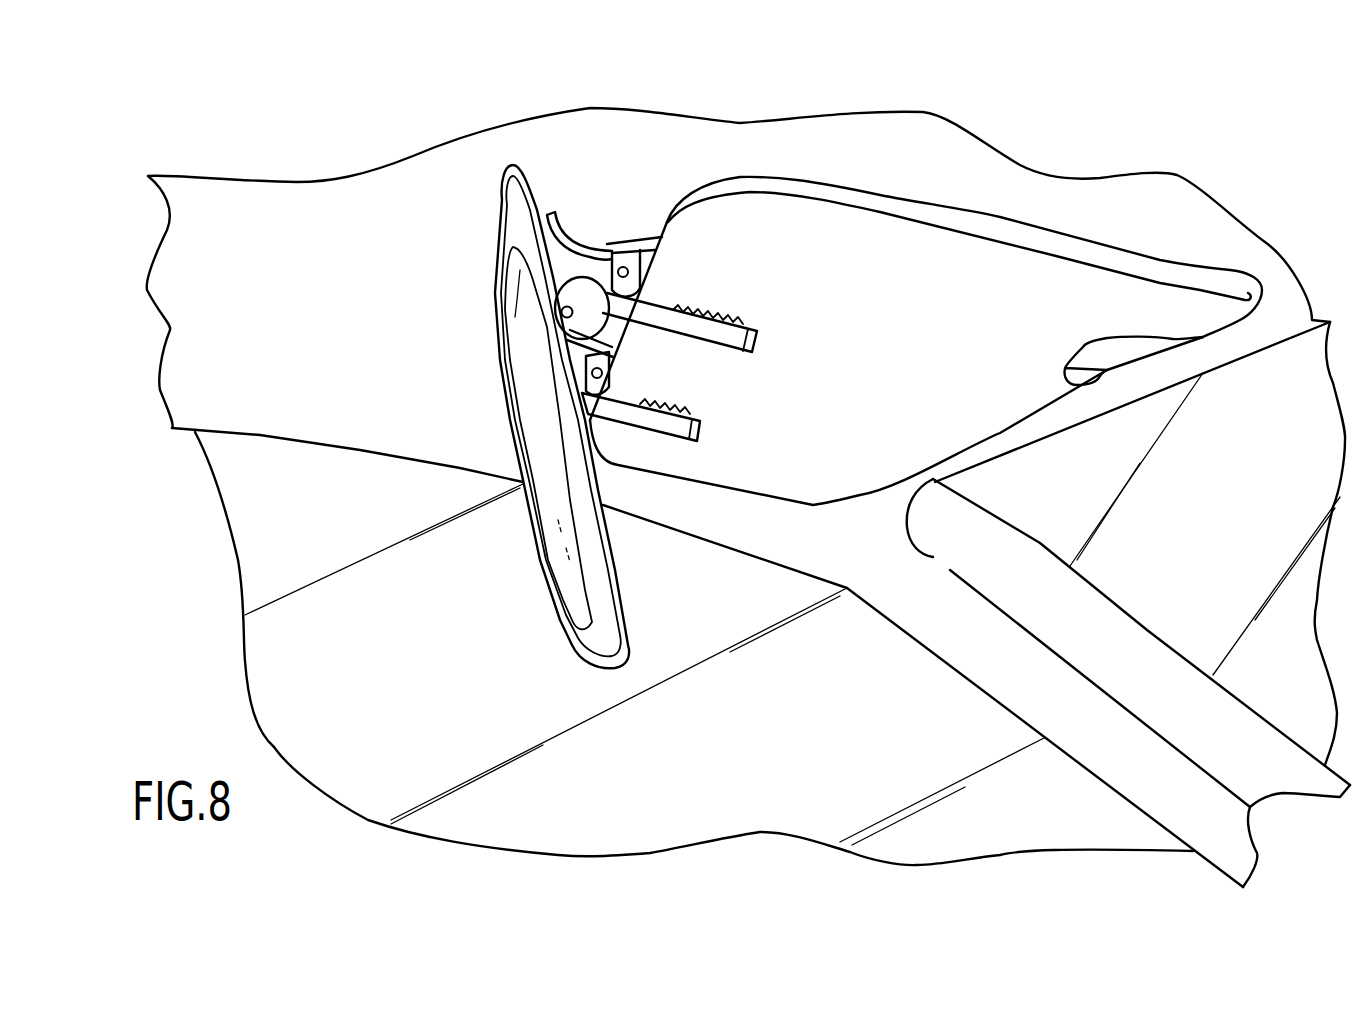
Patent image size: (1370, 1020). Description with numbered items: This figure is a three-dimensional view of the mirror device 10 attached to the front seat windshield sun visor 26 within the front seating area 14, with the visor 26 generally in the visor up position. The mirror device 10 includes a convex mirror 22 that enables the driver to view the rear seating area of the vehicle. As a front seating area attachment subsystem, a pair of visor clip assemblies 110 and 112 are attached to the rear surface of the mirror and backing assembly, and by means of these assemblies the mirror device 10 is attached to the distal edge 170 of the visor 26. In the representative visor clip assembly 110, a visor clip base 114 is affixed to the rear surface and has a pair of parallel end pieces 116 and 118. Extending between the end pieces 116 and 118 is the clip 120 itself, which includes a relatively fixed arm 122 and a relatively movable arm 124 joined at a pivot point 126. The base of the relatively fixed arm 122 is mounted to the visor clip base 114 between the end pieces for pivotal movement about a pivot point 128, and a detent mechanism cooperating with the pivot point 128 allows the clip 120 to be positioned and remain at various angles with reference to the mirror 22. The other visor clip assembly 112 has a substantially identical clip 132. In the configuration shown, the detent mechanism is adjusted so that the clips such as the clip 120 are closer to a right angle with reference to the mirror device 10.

The mirror device 10 is at (360, 348).
The front seating area 14 is at (472, 874).
The convex mirror 22 is at (533, 408).
The windshield sun visor 26 is at (880, 453).
The visor clip assembly 110 is at (926, 271).
The visor clip assembly 112 is at (740, 411).
The visor clip base 114 is at (577, 287).
The end piece 116 is at (580, 333).
The end piece 118 is at (593, 343).
The clip 120 is at (726, 254).
The relatively fixed arm 122 is at (753, 343).
The relatively movable arm 124 is at (650, 253).
The pivot point 126 is at (621, 266).
The pivot point 128 is at (562, 310).
The clip 132 is at (634, 380).
The distal edge 170 is at (667, 223).